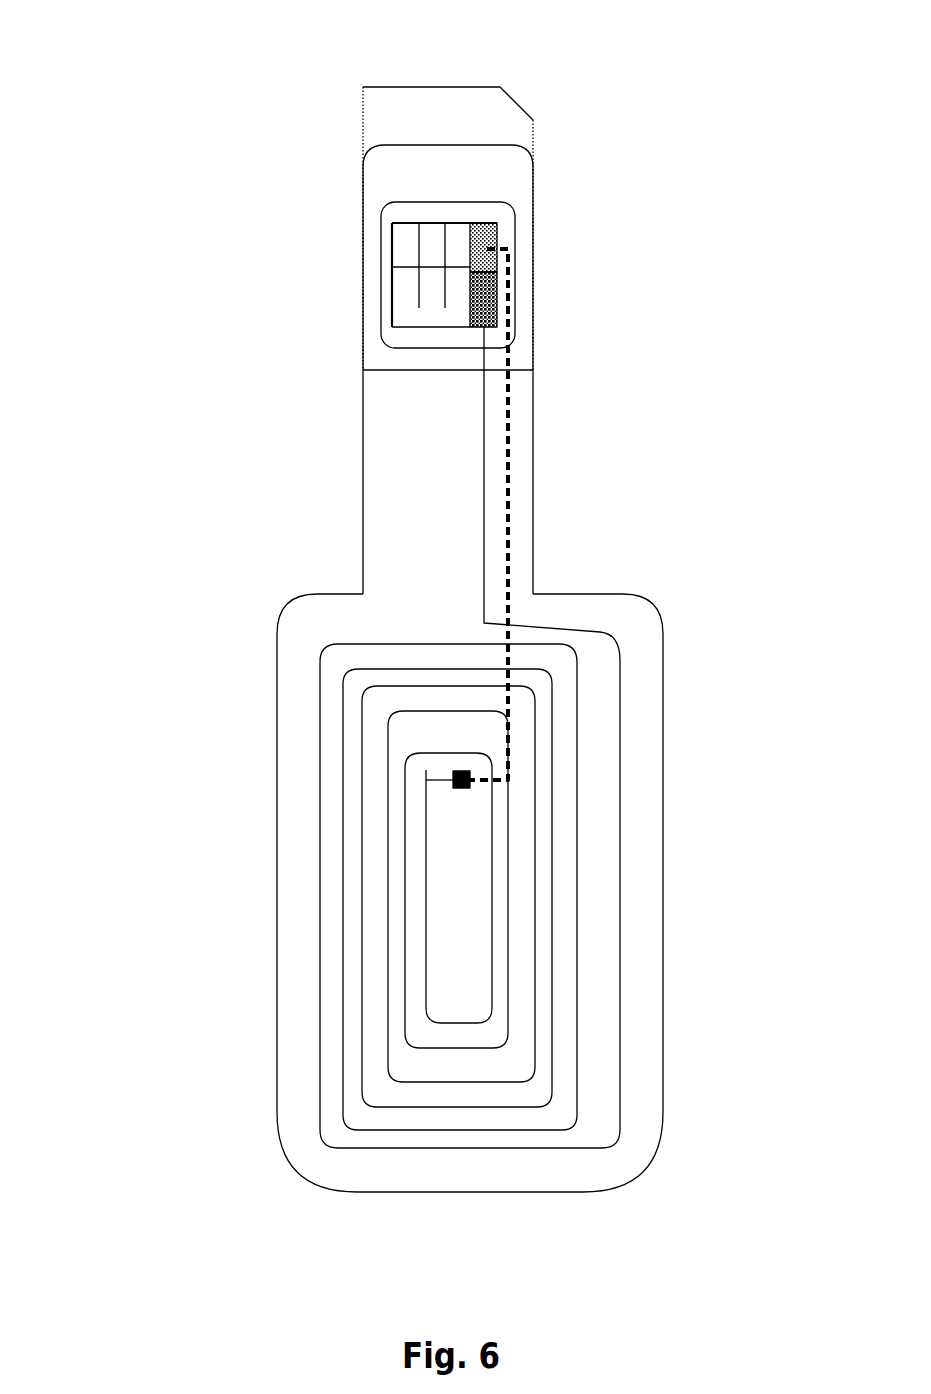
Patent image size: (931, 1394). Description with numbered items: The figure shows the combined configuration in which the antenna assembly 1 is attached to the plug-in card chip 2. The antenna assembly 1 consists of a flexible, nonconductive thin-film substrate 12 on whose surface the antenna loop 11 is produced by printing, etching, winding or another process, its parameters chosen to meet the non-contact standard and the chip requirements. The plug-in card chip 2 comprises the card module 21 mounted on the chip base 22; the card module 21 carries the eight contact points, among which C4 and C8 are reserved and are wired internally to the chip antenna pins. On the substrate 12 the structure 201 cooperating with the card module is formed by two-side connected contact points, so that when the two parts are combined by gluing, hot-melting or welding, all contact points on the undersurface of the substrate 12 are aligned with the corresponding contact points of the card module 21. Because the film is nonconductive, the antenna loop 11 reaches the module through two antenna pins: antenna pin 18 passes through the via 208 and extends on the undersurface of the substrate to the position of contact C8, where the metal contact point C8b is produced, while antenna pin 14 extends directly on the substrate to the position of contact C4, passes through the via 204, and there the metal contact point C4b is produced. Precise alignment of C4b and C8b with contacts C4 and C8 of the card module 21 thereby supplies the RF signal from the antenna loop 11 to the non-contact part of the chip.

The antenna assembly 1 is at (450, 759).
The plug-in card chip 2 is at (428, 302).
The antenna loop 11 is at (580, 737).
The flexible substrate 12 is at (277, 720).
The antenna pin 14 is at (484, 506).
The antenna pin 18 is at (507, 420).
The card module 21 is at (428, 254).
The chip base 22 is at (402, 116).
The structure cooperating with the card module 201 is at (428, 302).
The via 204 is at (574, 313).
The via 208 is at (453, 787).
The contact point C8b is at (487, 249).
The contact point C4b is at (497, 291).